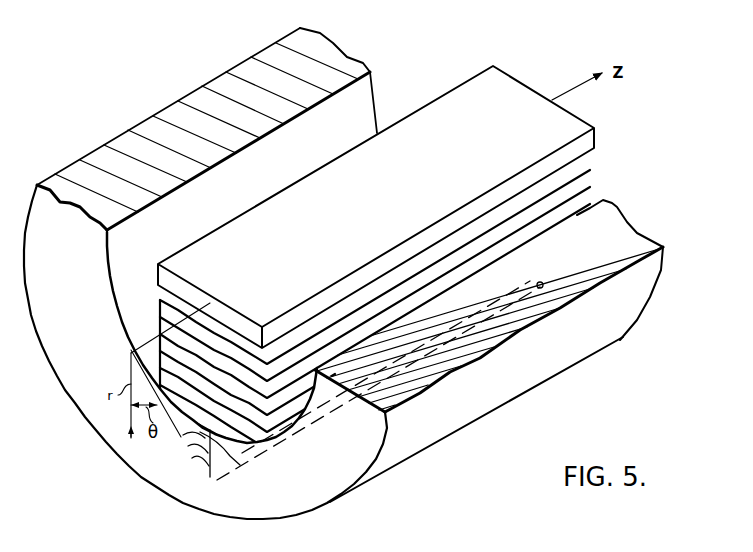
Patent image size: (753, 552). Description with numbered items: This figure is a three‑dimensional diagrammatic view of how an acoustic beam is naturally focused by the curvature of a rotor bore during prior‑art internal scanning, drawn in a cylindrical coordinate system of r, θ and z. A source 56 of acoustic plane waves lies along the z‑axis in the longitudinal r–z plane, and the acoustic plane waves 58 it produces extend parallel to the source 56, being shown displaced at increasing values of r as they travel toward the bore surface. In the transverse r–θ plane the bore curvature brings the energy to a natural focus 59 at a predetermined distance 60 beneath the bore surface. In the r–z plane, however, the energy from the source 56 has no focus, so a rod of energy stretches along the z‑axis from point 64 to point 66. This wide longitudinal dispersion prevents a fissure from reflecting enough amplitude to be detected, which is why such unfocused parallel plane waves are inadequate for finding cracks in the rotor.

The source 56 is at (446, 101).
The acoustic plane waves 58 is at (587, 180).
The natural focus 59 is at (211, 477).
The predetermined distance 60 is at (196, 469).
The point 64 is at (215, 486).
The point 66 is at (544, 286).